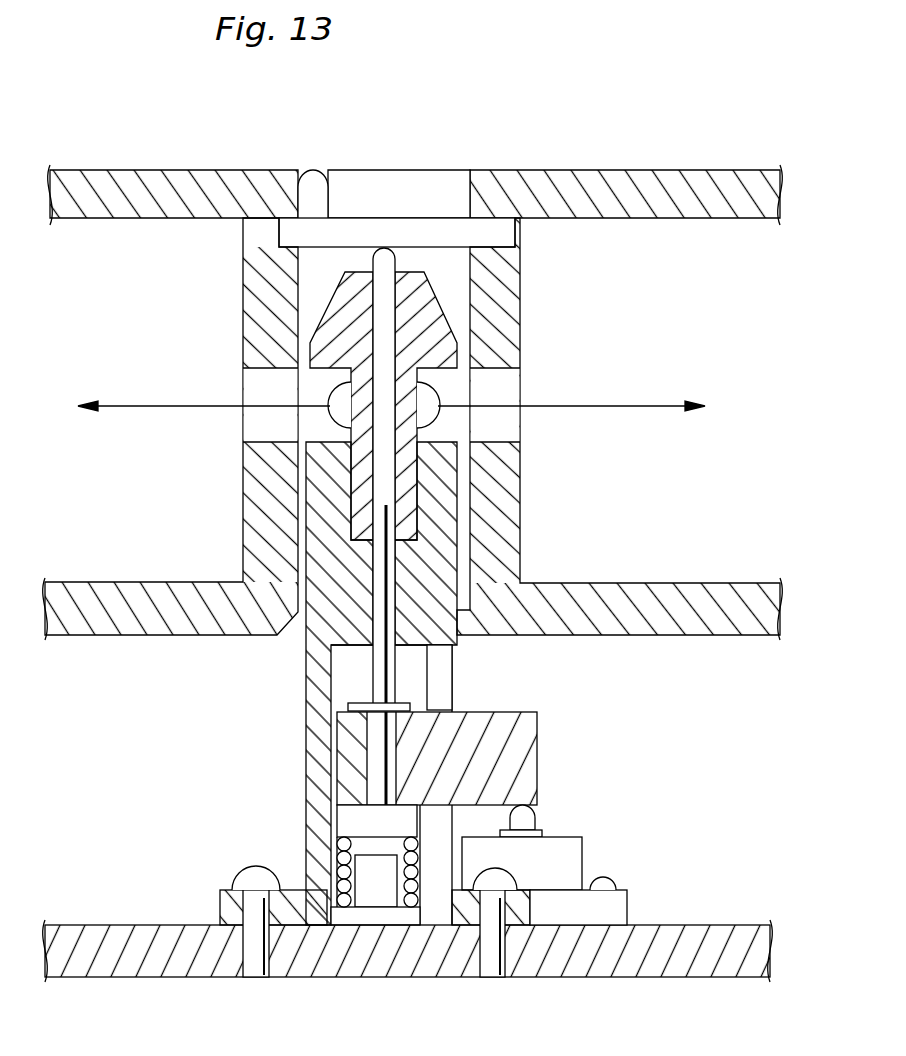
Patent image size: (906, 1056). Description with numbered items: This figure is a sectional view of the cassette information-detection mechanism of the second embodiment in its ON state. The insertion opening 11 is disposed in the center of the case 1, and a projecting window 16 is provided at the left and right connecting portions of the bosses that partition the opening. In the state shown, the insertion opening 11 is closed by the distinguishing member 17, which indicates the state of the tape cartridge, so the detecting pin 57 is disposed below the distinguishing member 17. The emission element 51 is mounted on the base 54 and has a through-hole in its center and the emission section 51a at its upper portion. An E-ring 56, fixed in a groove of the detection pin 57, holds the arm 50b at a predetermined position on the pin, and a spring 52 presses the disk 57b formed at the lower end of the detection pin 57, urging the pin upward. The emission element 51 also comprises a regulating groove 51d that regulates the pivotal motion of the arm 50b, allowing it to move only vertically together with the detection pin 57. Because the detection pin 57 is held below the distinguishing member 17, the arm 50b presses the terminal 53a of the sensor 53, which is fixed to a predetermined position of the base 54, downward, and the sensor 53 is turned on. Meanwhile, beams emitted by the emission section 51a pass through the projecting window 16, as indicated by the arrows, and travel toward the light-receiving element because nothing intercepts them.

The case 1 is at (731, 158).
The insertion opening 11 is at (420, 187).
The distinguishing member 17 is at (320, 191).
The projecting window 16 is at (262, 386).
The emission element 51 is at (445, 515).
The emission section 51a is at (330, 410).
The regulating groove 51d is at (440, 676).
The arm 50b is at (520, 716).
The spring 52 is at (334, 852).
The sensor 53 is at (567, 858).
The terminal 53a is at (528, 818).
The base 54 is at (663, 932).
The E-ring 56 is at (350, 704).
The detection pin 57 is at (386, 318).
The disk 57b is at (343, 818).